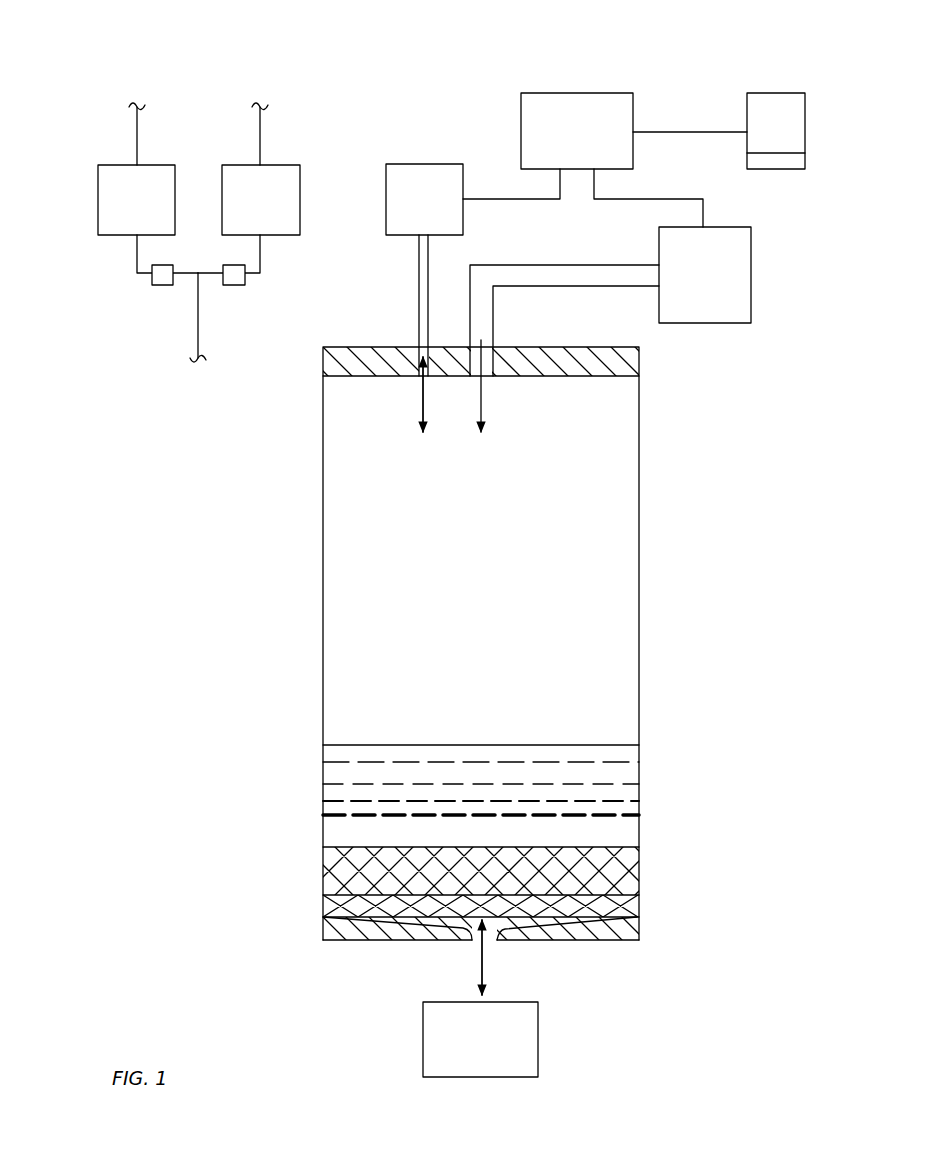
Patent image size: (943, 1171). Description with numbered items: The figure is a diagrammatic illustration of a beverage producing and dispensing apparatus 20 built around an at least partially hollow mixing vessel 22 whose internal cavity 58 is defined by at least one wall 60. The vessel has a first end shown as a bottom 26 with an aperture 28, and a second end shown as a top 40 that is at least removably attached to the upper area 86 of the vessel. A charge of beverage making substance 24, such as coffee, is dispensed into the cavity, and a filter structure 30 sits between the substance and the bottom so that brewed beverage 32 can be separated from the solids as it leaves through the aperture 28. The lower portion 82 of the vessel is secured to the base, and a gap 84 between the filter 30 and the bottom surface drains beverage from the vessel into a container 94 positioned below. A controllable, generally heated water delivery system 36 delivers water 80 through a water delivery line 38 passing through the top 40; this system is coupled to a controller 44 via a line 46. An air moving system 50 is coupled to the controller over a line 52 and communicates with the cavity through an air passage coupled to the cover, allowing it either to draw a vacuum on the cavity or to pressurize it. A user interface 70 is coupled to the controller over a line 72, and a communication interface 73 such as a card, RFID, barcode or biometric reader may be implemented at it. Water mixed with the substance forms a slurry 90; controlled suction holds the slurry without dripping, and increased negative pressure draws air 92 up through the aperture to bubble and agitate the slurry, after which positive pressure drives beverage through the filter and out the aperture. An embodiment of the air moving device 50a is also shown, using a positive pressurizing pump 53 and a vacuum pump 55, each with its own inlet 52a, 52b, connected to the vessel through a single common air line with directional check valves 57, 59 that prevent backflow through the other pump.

The beverage producing and dispensing apparatus 20 is at (419, 708).
The mixing vessel 22 is at (650, 597).
The beverage making substance 24 is at (343, 868).
The bottom 26 is at (640, 932).
The aperture 28 is at (473, 940).
The filter structure 30 is at (627, 912).
The beverage 32 is at (477, 967).
The water delivery system 36 is at (732, 275).
The water delivery line 38 is at (560, 280).
The top 40 is at (641, 362).
The controller 44 is at (530, 115).
The line 46 is at (665, 199).
The air moving system 50 is at (425, 164).
The air moving device embodiment 50a is at (198, 198).
The line 52 is at (503, 199).
The inlet to positive pressurizing pump 52a is at (137, 140).
The inlet to vacuum pump 52b is at (260, 140).
The positive pressurizing pump 53 is at (110, 202).
The vacuum pump 55 is at (233, 202).
The check valve 57 is at (162, 285).
The internal cavity 58 is at (409, 525).
The check valve 59 is at (238, 280).
The wall 60 is at (639, 650).
The user interface 70 is at (770, 93).
The line 72 is at (690, 132).
The communication interface 73 is at (777, 169).
The water 80 is at (483, 388).
The lower portion 82 is at (305, 907).
The gap 84 is at (533, 922).
The upper area 86 is at (312, 392).
The slurry 90 is at (332, 833).
The air 92 is at (484, 940).
The container 94 is at (550, 1045).